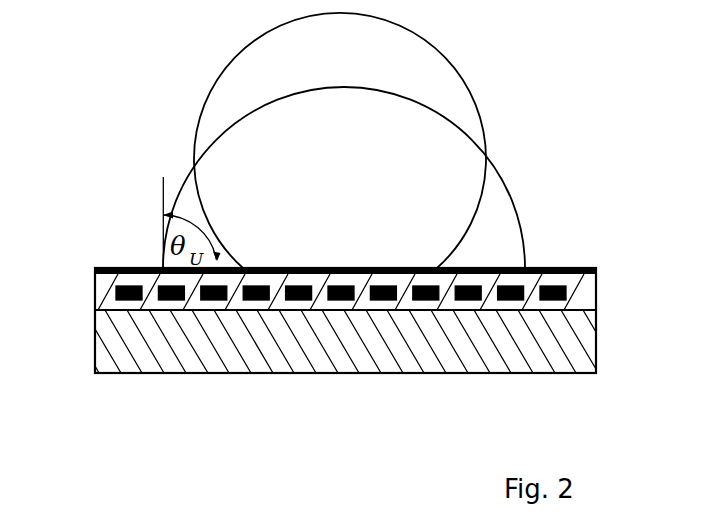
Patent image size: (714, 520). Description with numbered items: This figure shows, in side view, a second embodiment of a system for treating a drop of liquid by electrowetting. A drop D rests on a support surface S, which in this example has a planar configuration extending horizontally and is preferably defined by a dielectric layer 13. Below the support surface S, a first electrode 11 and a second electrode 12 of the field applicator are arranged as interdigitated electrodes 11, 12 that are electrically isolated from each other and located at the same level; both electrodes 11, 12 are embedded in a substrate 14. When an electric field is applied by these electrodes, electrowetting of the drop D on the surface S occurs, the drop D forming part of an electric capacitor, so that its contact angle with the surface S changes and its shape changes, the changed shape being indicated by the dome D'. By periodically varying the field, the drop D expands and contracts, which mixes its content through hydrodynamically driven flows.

The first electrode 11 is at (468, 300).
The second electrode 12 is at (427, 300).
The dielectric layer 13 is at (117, 268).
The substrate 14 is at (177, 355).
The drop D is at (358, 140).
The dome D' is at (361, 177).
The support surface S is at (563, 262).